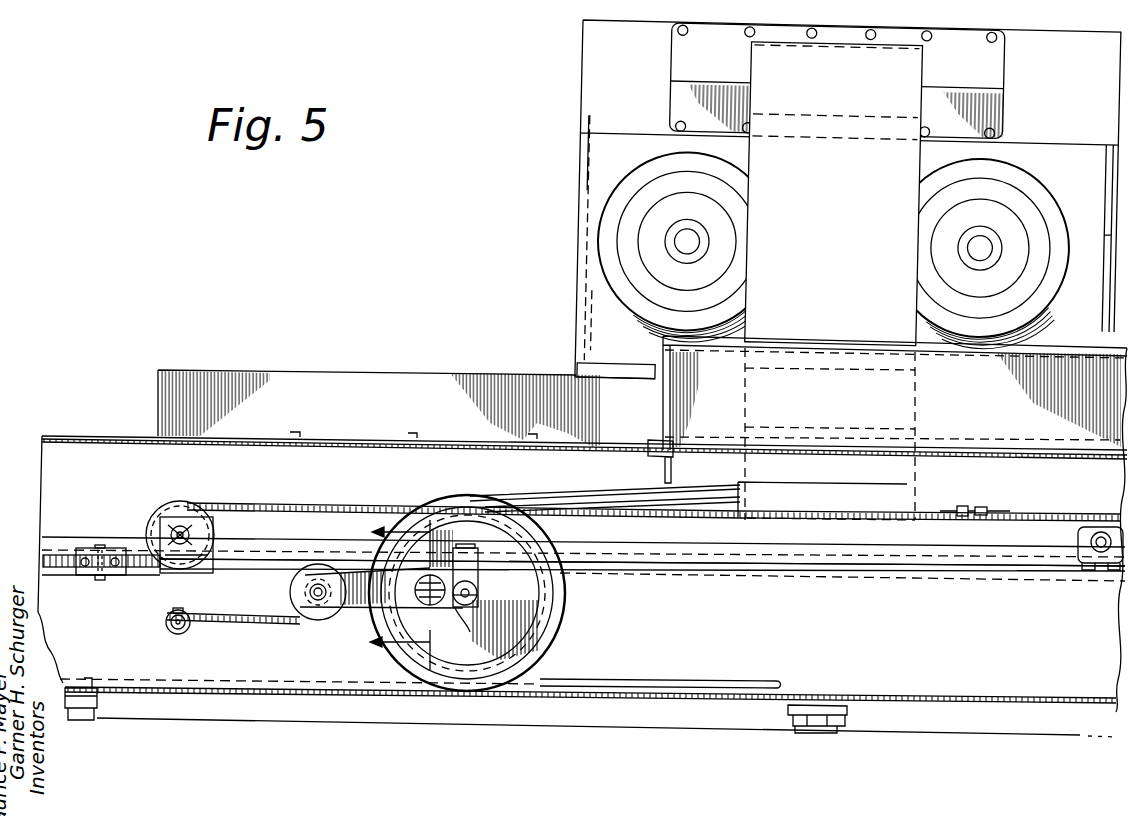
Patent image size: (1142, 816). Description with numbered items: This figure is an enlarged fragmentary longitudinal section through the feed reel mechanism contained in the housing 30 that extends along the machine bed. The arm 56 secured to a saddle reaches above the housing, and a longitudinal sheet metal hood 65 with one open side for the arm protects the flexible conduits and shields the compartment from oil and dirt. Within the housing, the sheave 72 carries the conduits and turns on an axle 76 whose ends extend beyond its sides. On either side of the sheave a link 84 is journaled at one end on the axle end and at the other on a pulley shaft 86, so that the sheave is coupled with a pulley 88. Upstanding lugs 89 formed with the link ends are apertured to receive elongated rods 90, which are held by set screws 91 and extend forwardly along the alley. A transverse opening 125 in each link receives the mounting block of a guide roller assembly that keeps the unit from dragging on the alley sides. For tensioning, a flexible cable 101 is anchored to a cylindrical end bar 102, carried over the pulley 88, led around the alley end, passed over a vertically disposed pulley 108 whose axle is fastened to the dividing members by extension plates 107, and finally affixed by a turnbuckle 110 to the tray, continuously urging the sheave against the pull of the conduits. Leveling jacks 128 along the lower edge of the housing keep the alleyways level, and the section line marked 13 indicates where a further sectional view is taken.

The section line 13- 13 is at (385, 595).
The housing 30 is at (103, 437).
The arm 56 is at (848, 208).
The sheet metal hood 65 is at (1040, 372).
The sheave 72 is at (530, 598).
The axle 76 is at (465, 615).
The link 84 is at (381, 600).
The pulley shaft 86 is at (318, 620).
The pulley 88 is at (305, 592).
The upstanding lug 89 is at (482, 567).
The elongated rod 90 is at (718, 565).
The set screw 91 is at (470, 548).
The flexible cable 101 is at (340, 508).
The cylindrical end bar 102 is at (178, 635).
The extension plate 107 is at (108, 537).
The pulley 108 is at (178, 510).
The turnbuckle 110 is at (943, 510).
The transverse opening 125 is at (440, 612).
The leveling jack 128 is at (100, 720).